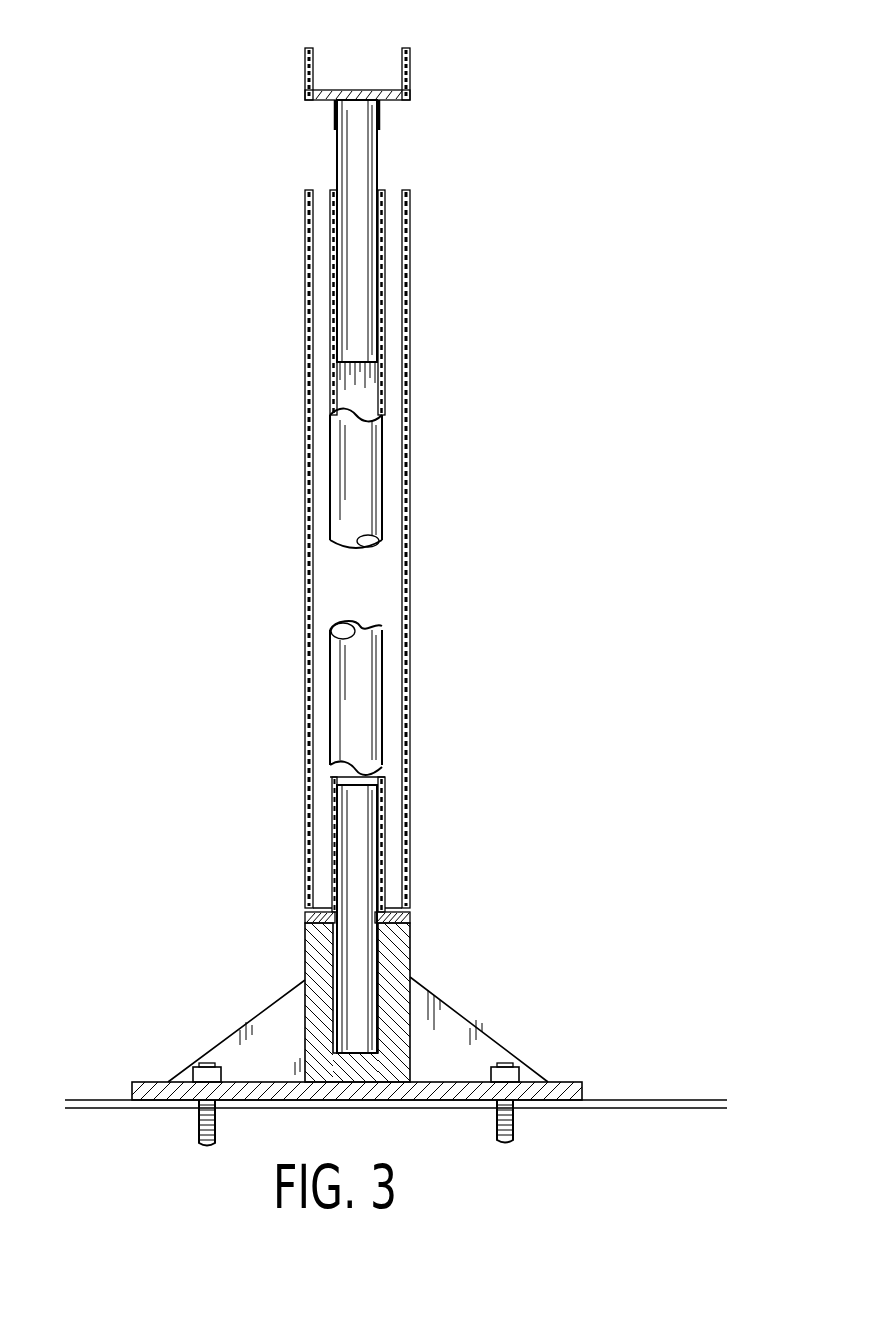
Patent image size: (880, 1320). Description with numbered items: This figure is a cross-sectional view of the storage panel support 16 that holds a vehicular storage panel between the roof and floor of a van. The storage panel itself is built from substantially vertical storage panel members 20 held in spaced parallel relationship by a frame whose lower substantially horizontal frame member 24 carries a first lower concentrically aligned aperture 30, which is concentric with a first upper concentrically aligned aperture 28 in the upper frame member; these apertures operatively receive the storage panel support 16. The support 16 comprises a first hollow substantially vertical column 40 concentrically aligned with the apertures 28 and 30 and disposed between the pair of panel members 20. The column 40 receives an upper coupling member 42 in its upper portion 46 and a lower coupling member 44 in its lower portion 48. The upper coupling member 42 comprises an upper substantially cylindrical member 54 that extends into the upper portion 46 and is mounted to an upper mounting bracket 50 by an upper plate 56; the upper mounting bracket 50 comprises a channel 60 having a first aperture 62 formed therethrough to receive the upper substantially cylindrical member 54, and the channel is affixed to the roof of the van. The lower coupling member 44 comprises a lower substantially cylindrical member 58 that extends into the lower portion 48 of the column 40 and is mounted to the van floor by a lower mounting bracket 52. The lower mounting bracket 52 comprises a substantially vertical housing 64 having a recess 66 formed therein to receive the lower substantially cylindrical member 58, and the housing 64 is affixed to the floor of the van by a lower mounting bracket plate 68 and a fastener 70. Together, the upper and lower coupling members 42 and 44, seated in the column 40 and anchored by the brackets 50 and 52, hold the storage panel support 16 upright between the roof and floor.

The storage panel support 16 is at (225, 460).
The substantially vertical storage panel member 20 is at (310, 311).
The lower substantially horizontal frame member 24 is at (405, 928).
The first upper concentrically aligned aperture 28 is at (398, 178).
The first lower concentrically aligned aperture 30 is at (328, 893).
The first hollow substantially vertical column 40 is at (333, 487).
The upper coupling member 42 is at (260, 121).
The lower coupling member 44 is at (464, 885).
The upper portion 46 is at (382, 250).
The lower portion 48 is at (385, 837).
The upper mounting bracket 50 is at (432, 65).
The lower mounting bracket 52 is at (230, 967).
The upper substantially cylindrical member 54 is at (333, 253).
The upper plate 56 is at (365, 92).
The lower substantially cylindrical member 58 is at (375, 797).
The channel 60 is at (310, 48).
The first aperture 62 is at (398, 125).
The substantially vertical housing 64 is at (310, 1048).
The recess 66 is at (330, 975).
The lower mounting bracket plate 68 is at (557, 1080).
The fastener 70 is at (205, 1140).